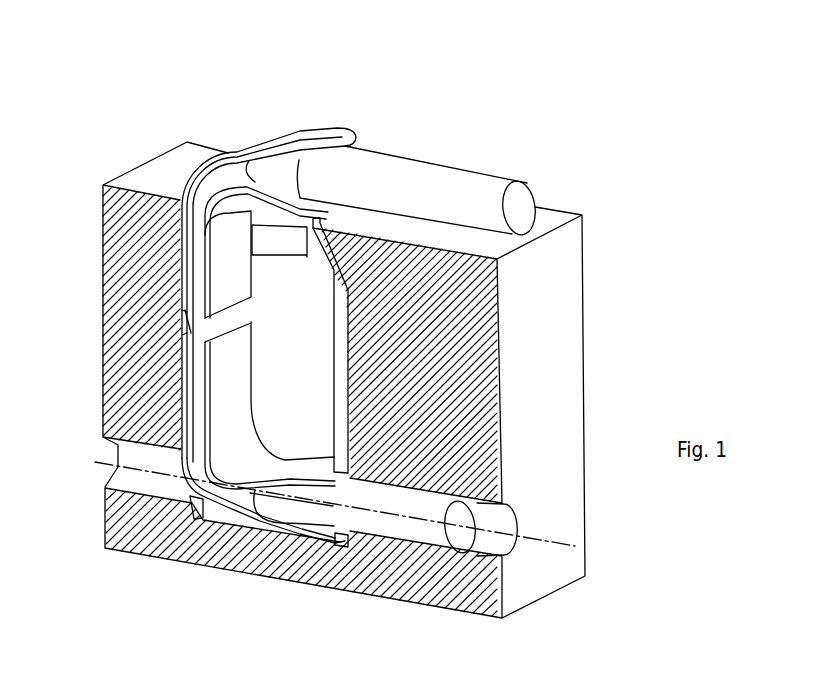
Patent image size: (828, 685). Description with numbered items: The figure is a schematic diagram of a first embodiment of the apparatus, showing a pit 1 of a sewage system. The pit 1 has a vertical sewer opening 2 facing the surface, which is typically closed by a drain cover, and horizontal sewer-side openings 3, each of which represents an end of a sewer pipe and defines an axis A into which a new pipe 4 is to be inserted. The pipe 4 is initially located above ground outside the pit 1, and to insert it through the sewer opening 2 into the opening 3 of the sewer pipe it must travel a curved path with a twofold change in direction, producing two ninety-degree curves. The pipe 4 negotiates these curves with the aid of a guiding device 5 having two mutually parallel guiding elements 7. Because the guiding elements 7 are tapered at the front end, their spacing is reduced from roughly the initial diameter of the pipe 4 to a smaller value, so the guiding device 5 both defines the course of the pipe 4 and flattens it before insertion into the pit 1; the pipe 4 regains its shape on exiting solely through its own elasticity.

The pit 1 is at (341, 383).
The sewer opening 2 is at (274, 237).
The sewer-side openings 3 is at (192, 500).
The pipe 4 is at (382, 148).
The guiding device 5 is at (183, 179).
The guiding elements 7 is at (224, 263).
The axis A is at (526, 542).